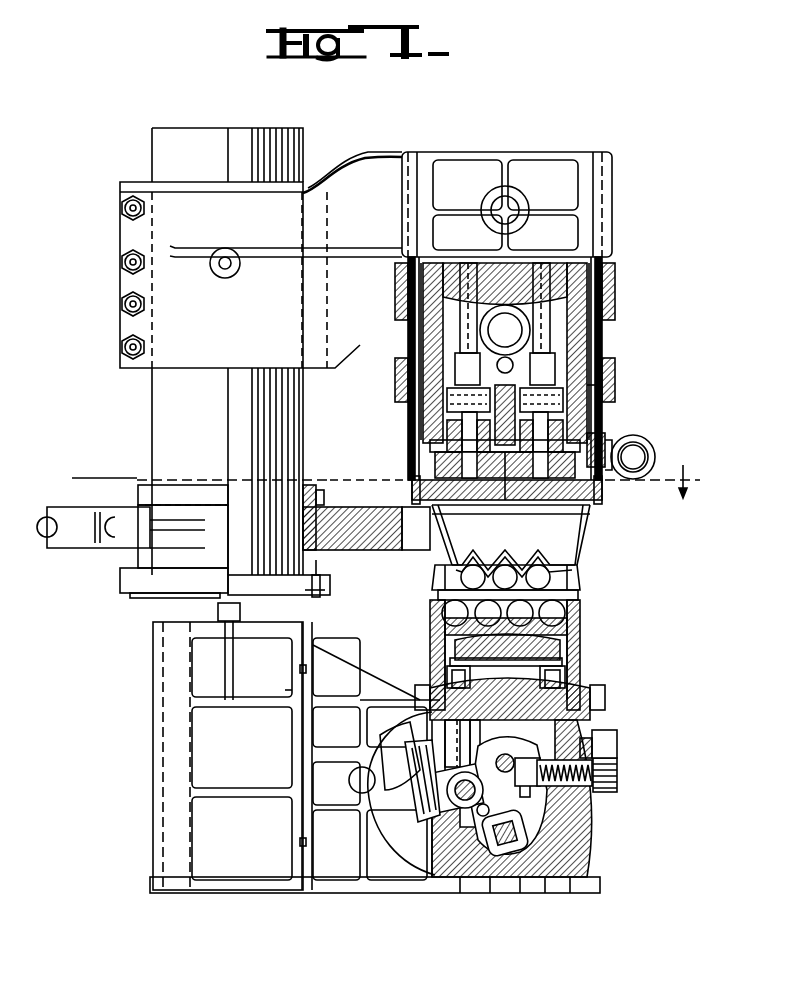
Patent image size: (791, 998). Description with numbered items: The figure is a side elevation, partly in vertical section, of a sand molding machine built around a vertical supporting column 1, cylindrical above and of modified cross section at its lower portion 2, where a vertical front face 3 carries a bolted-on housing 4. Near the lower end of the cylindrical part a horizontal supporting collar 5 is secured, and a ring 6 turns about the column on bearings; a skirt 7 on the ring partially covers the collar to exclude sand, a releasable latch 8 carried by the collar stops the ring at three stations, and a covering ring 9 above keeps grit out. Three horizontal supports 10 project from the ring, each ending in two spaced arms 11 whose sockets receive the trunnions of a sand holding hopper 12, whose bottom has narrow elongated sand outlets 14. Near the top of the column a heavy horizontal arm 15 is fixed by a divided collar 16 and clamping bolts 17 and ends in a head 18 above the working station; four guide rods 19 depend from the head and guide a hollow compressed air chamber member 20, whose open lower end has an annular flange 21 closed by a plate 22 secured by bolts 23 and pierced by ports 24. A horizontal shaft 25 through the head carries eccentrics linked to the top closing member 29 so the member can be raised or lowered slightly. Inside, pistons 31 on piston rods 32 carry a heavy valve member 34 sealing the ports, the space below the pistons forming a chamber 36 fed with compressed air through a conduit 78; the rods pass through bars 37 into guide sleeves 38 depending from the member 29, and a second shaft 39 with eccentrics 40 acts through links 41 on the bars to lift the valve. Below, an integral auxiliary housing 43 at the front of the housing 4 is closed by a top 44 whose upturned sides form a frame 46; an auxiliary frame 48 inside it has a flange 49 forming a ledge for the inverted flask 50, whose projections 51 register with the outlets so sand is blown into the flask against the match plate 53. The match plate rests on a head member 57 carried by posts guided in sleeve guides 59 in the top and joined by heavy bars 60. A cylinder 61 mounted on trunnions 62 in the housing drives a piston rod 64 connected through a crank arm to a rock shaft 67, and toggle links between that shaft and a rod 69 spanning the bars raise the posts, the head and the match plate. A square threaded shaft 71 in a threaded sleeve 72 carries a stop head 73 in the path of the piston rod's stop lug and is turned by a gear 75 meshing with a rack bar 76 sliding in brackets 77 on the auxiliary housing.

The vertical supporting column 1 is at (165, 398).
The lower portion of column 2 is at (235, 845).
The vertical front face 3 is at (292, 740).
The housing 4 is at (400, 880).
The horizontal supporting collar 5 is at (265, 630).
The ring 6 is at (324, 495).
The shield or skirt 7 is at (160, 580).
The releasable latch 8 is at (316, 600).
The covering ring 9 is at (310, 488).
The projecting arms or supports 10 is at (170, 540).
The arms 11 is at (135, 520).
The sand holding hopper 12 is at (580, 540).
The sand outlets 14 is at (466, 555).
The horizontal arm 15 is at (360, 165).
The divided collar 16 is at (198, 355).
The clamping bolts 17 is at (125, 212).
The head 18 is at (488, 165).
The cylindrical guide rods 19 is at (408, 338).
The compressed air chamber member 20 is at (612, 372).
The annular flange 21 is at (412, 466).
The plate 22 is at (605, 490).
The bolts 23 is at (412, 490).
The ports 24 is at (518, 500).
The horizontal shaft 25 is at (510, 206).
The top closing member 29 is at (530, 270).
The piston 31 is at (447, 398).
The piston rod 32 is at (462, 422).
The valve member 34 is at (435, 462).
The chamber 36 is at (430, 443).
The horizontal members or bars 37 is at (612, 382).
The guide sleeves 38 is at (396, 298).
The second shaft 39 is at (515, 365).
The eccentrics 40 is at (590, 350).
The links 41 is at (421, 355).
The auxiliary housing 43 is at (582, 840).
The top 44 is at (580, 690).
The frame 46 is at (566, 640).
The auxiliary frame 48 is at (567, 625).
The horizontal flange 49 is at (430, 614).
The flask 50 is at (580, 590).
The elongated projections 51 is at (565, 580).
The match plate 53 is at (503, 610).
The head member 57 is at (562, 660).
The sleeve guides 59 is at (447, 672).
The horizontal heavy bars 60 is at (455, 745).
The cylinder 61 is at (395, 820).
The horizontal trunnions 62 is at (358, 790).
The piston rod 64 is at (430, 805).
The rock shaft 67 is at (505, 853).
The rod 69 is at (505, 755).
The square threaded shaft 71 is at (590, 790).
The interiorly threaded sleeve 72 is at (583, 800).
The stop head 73 is at (483, 792).
The gear 75 is at (605, 780).
The rack bar 76 is at (612, 750).
The brackets 77 is at (605, 745).
The conduit 78 is at (650, 445).